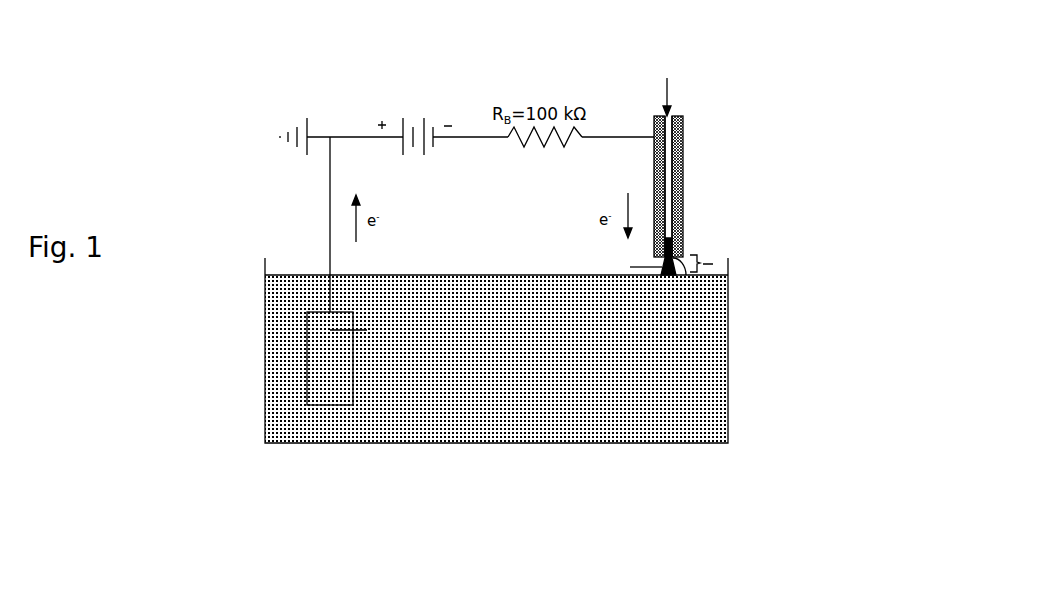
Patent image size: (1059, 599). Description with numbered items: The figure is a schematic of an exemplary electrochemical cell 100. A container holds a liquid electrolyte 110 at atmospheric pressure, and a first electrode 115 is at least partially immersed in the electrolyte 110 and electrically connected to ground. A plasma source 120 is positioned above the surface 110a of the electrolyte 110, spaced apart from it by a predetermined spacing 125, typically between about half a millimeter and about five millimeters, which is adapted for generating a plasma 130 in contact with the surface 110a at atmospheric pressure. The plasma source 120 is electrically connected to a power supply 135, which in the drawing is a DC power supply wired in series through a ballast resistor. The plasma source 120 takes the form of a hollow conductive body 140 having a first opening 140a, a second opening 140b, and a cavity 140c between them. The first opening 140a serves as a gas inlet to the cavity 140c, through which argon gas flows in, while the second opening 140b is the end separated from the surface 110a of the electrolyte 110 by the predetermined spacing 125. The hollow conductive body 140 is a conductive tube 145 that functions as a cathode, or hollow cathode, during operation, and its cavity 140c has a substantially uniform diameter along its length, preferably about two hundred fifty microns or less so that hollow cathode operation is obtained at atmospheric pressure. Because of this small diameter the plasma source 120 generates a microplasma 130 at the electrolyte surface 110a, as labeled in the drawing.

The electrochemical cell 100 is at (728, 430).
The liquid electrolyte 110 is at (705, 328).
The surface of the electrolyte 110a is at (412, 274).
The first electrode 115 is at (318, 361).
The plasma source 120 is at (745, 138).
The predetermined spacing 125 is at (728, 264).
The plasma 130 is at (570, 253).
The power supply 135 is at (373, 89).
The hollow conductive body 140 is at (741, 186).
The conductive tube 145 is at (683, 173).
The first opening 140a is at (676, 116).
The second opening 140b is at (686, 275).
The cavity 140c is at (683, 213).